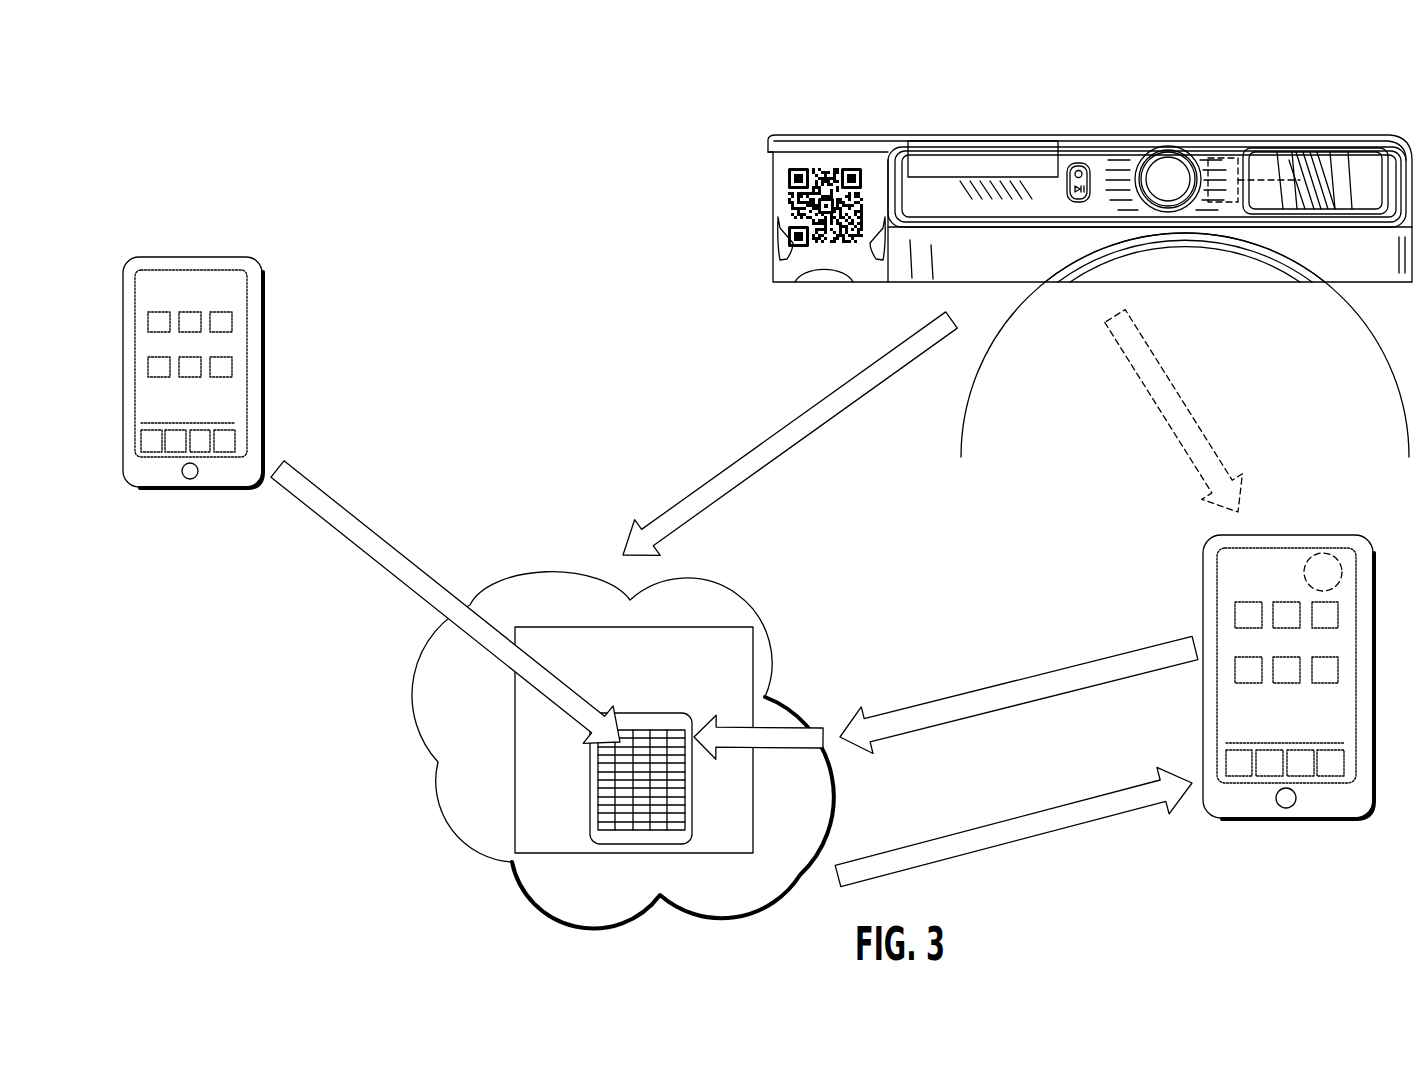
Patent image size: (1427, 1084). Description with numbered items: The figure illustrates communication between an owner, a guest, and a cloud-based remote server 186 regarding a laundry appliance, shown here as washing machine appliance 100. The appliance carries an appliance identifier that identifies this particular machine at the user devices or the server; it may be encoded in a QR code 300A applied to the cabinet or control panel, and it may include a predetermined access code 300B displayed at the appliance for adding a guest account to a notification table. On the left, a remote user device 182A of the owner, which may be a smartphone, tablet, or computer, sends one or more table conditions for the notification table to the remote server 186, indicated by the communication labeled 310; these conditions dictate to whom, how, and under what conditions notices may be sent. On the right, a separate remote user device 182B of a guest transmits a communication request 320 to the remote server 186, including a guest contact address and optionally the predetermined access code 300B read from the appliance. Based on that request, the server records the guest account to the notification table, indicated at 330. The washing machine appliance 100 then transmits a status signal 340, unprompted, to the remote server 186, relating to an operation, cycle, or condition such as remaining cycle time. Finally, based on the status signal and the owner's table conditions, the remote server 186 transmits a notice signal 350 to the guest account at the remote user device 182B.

The washing machine appliance 100 is at (1172, 124).
The QR code 300A is at (788, 206).
The predetermined access code 300B is at (993, 137).
The remote user device 182A is at (262, 337).
The remote user device 182B is at (1366, 536).
The remote server 186 is at (667, 694).
The receiving table conditions 310 is at (357, 548).
The communication request 320 is at (962, 692).
The recording guest account 330 is at (775, 727).
The status signal 340 is at (752, 449).
The notice signal 350 is at (1020, 840).